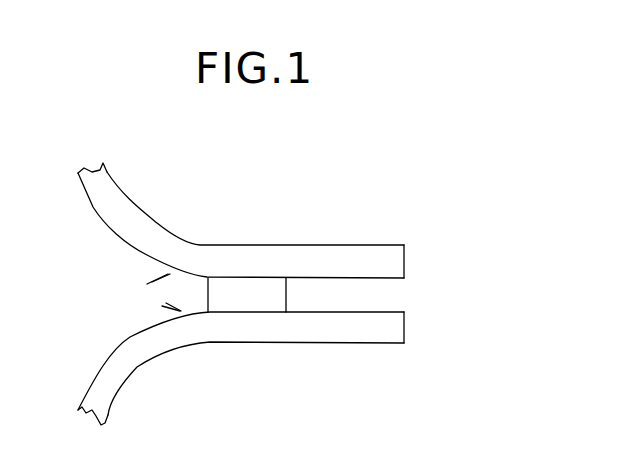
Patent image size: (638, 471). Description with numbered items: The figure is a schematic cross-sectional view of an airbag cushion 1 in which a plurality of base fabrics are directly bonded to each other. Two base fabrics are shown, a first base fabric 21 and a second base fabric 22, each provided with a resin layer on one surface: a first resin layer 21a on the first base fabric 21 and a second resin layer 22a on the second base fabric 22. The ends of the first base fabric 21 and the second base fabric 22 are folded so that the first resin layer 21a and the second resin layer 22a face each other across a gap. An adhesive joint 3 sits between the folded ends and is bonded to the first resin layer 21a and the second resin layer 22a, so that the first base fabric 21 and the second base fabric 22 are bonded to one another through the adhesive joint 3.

The airbag cushion 1 is at (363, 203).
The first base fabric 21 is at (388, 263).
The first resin layer 21a is at (172, 273).
The second base fabric 22 is at (388, 329).
The second resin layer 22a is at (182, 312).
The adhesive joint 3 is at (267, 298).